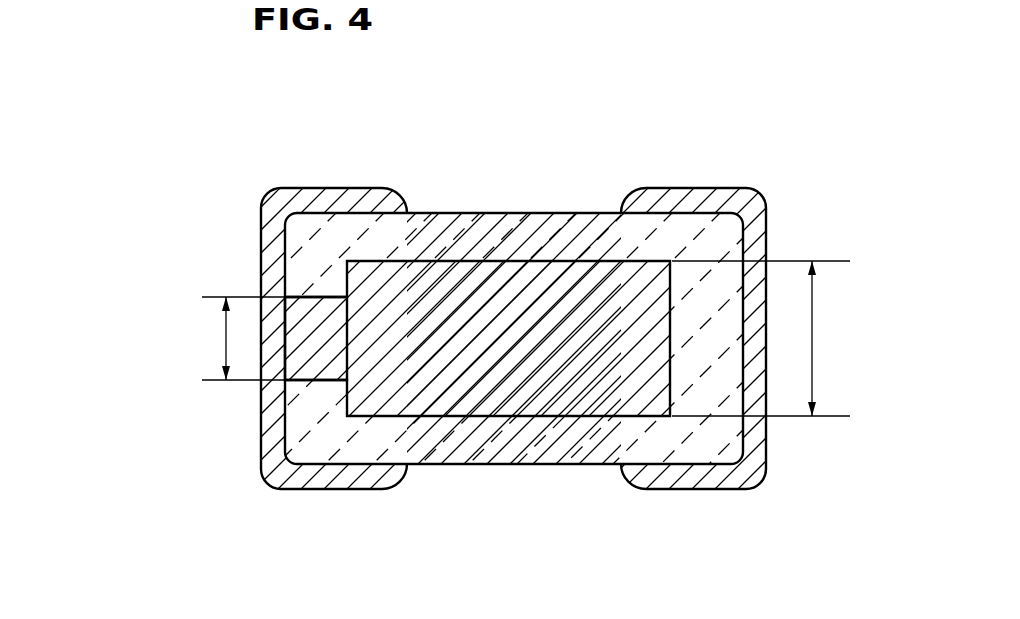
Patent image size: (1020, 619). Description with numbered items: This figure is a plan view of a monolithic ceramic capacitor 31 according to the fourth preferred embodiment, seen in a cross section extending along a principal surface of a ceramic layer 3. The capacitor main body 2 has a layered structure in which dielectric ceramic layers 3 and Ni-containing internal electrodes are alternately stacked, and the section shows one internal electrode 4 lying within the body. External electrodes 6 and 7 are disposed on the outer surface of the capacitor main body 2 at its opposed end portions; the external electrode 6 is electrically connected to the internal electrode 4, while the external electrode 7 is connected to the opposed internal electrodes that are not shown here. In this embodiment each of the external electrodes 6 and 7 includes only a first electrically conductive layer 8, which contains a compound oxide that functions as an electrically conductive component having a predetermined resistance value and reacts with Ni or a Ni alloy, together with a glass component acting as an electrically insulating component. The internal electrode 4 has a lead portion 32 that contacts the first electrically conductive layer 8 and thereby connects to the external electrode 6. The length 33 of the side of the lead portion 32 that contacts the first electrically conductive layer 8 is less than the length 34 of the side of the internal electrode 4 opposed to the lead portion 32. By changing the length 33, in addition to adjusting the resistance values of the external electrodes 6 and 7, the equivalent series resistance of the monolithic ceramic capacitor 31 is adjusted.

The capacitor main body 2 is at (558, 200).
The ceramic layer 3 is at (500, 445).
The internal electrode 4 is at (464, 246).
The external electrode 6 is at (252, 236).
The external electrode 7 is at (776, 233).
The first electrically conductive layer 8 is at (278, 464).
The monolithic ceramic capacitor 31 is at (235, 111).
The lead portion 32 is at (327, 333).
The length of a side of the lead portion 33 is at (226, 340).
The length of the side of the internal electrode 34 is at (812, 336).